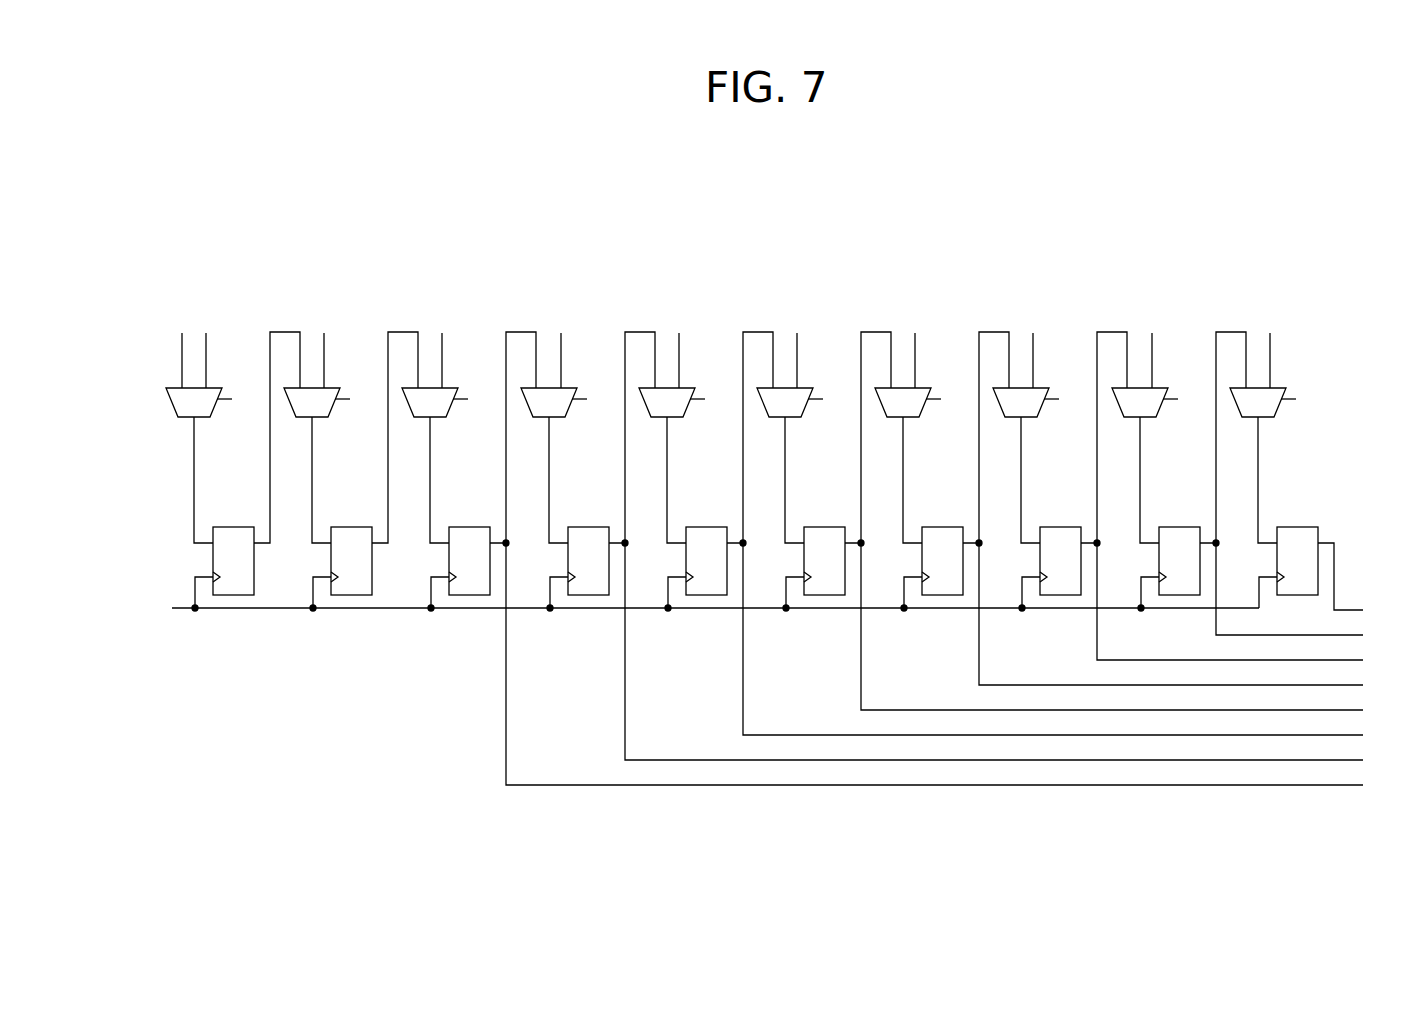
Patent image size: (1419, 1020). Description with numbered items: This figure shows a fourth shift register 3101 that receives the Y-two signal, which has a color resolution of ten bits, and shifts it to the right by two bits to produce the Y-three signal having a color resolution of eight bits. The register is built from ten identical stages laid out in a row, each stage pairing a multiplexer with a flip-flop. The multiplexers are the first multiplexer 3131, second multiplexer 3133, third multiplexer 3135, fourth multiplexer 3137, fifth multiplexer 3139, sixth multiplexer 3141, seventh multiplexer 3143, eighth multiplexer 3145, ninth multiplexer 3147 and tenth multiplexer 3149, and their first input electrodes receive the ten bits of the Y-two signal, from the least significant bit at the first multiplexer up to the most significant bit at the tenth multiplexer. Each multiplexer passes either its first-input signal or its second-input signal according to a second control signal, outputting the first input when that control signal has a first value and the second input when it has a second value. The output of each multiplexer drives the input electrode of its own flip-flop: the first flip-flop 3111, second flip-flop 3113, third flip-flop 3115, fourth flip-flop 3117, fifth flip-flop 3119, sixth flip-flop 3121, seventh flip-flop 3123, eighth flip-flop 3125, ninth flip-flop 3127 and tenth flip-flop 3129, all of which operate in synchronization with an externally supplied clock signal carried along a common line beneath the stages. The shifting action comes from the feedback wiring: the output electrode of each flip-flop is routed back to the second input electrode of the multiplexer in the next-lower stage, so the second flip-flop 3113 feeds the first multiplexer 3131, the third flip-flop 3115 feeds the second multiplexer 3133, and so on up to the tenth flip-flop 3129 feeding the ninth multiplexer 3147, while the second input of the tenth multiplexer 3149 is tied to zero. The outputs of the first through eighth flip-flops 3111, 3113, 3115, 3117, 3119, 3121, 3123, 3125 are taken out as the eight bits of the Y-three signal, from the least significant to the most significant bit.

The fourth shift register 3101 is at (822, 249).
The first flip-flop 3111 is at (1311, 548).
The second flip-flop 3113 is at (1250, 483).
The third flip-flop 3115 is at (1191, 496).
The fourth flip-flop 3117 is at (1132, 508).
The fifth flip-flop 3119 is at (1073, 521).
The sixth flip-flop 3121 is at (1014, 533).
The seventh flip-flop 3123 is at (955, 546).
The eighth flip-flop 3125 is at (895, 558).
The ninth flip-flop 3127 is at (364, 471).
The tenth flip-flop 3129 is at (231, 527).
The first multiplexer 3131 is at (1280, 425).
The second multiplexer 3133 is at (1162, 425).
The third multiplexer 3135 is at (1043, 425).
The fourth multiplexer 3137 is at (925, 425).
The fifth multiplexer 3139 is at (807, 425).
The sixth multiplexer 3141 is at (689, 425).
The seventh multiplexer 3143 is at (571, 425).
The eighth multiplexer 3145 is at (452, 425).
The ninth multiplexer 3147 is at (334, 425).
The tenth multiplexer 3149 is at (202, 418).